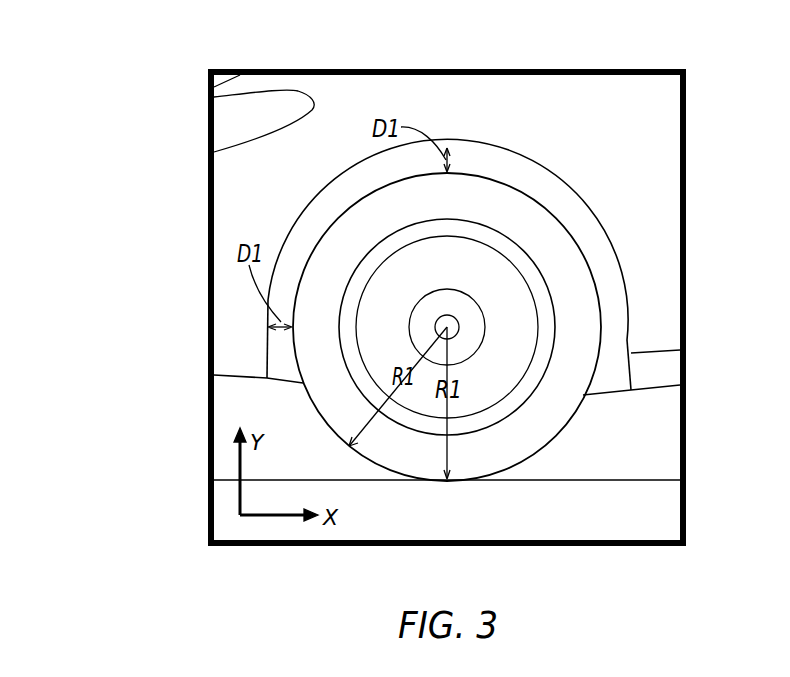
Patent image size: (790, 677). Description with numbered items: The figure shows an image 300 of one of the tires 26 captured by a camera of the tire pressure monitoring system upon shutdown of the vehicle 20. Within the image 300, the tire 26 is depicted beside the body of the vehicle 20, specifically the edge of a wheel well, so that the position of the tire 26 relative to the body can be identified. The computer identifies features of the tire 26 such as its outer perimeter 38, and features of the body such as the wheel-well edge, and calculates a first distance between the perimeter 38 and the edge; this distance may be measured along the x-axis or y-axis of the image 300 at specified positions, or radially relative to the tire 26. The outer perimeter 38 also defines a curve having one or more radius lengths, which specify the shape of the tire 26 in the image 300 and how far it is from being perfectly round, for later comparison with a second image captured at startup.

The image 300 is at (150, 141).
The vehicle 20 is at (541, 106).
The tire 26 is at (475, 455).
The outer perimeter 38 is at (565, 423).